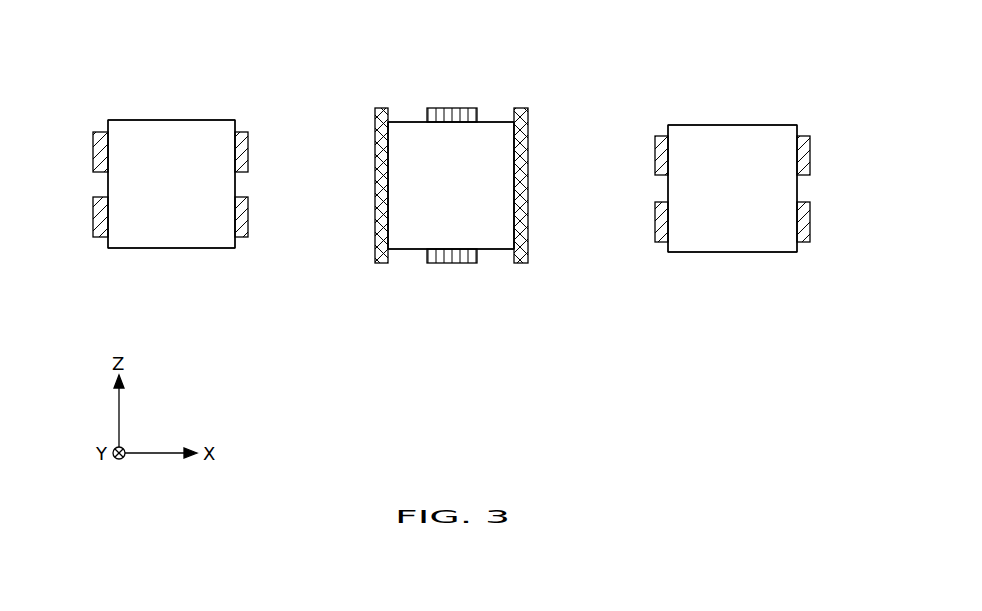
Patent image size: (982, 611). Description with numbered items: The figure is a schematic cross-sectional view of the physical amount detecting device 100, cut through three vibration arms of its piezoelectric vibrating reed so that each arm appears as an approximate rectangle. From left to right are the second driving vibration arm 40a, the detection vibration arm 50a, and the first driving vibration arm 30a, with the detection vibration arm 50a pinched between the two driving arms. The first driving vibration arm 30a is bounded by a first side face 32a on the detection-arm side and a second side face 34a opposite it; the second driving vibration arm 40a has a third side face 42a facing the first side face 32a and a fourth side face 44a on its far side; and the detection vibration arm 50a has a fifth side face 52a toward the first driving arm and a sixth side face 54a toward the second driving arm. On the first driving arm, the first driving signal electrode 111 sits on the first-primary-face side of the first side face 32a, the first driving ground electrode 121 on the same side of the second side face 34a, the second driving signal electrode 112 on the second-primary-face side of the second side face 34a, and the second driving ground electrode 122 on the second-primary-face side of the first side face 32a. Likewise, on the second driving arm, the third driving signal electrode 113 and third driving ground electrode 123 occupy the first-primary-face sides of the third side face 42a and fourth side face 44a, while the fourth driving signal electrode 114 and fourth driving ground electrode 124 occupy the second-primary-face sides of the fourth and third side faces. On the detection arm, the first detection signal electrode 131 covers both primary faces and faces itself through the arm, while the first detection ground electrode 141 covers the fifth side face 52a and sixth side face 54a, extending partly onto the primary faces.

The physical amount detecting device 100 is at (778, 33).
The first driving vibration arm 30a is at (670, 88).
The second driving vibration arm 40a is at (110, 84).
The detection vibration arm 50a is at (380, 86).
The first side face 32a is at (665, 192).
The second side face 34a is at (800, 193).
The third side face 42a is at (237, 188).
The fourth side face 44a is at (107, 187).
The fifth side face 52a is at (527, 198).
The sixth side face 54a is at (377, 197).
The first driving signal electrode 111 is at (662, 150).
The second driving signal electrode 112 is at (802, 230).
The third driving signal electrode 113 is at (246, 155).
The fourth driving signal electrode 114 is at (94, 223).
The first driving ground electrode 121 is at (802, 158).
The second driving ground electrode 122 is at (662, 230).
The third driving ground electrode 123 is at (94, 145).
The fourth driving ground electrode 124 is at (243, 223).
The first detection signal electrode 131 is at (457, 108).
The first detection ground electrode 141 is at (377, 157).